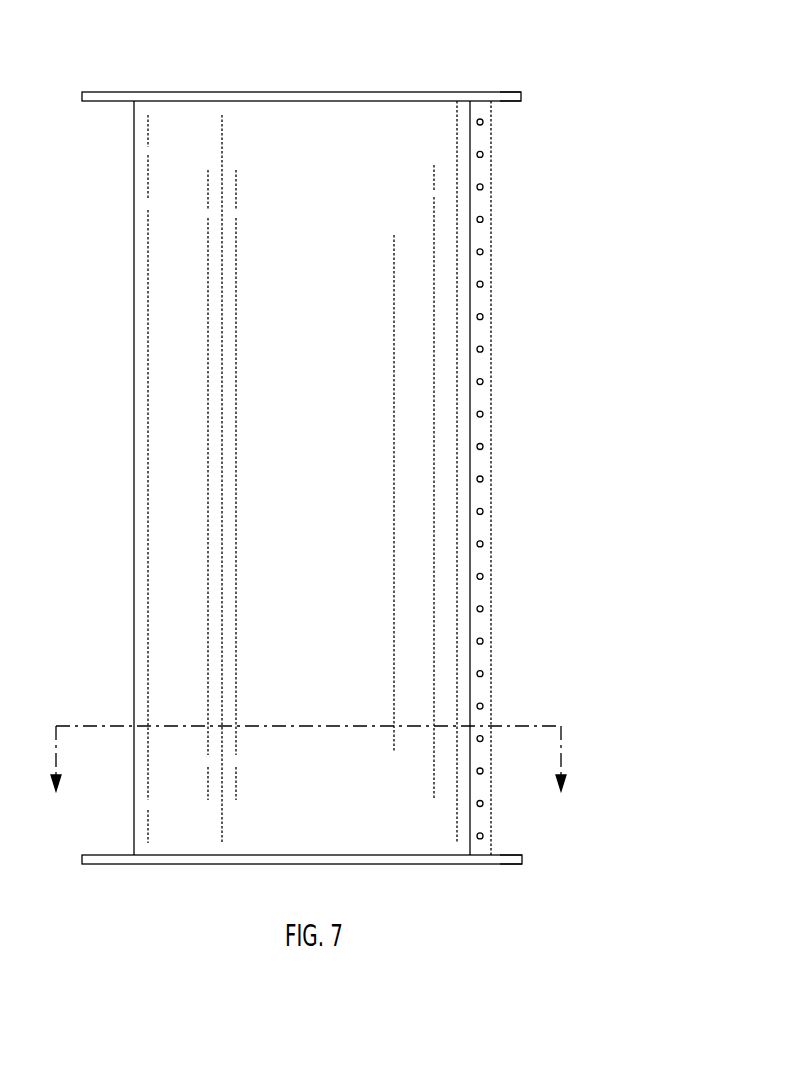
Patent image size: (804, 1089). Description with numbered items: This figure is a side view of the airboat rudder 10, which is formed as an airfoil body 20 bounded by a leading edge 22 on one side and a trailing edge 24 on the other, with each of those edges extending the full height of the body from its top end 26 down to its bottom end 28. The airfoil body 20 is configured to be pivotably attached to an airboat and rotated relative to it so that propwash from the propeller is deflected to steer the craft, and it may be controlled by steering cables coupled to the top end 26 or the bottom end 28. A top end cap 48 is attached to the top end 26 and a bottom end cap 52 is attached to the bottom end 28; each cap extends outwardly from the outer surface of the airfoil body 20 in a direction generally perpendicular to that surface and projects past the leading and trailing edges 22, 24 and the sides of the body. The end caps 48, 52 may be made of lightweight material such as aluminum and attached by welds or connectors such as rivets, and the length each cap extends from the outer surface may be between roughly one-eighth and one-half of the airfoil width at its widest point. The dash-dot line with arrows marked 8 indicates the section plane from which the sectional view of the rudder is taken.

The airboat rudder 10 is at (590, 182).
The airfoil body 20 is at (409, 585).
The leading edge 22 is at (134, 248).
The trailing edge 24 is at (491, 310).
The top end 26 is at (281, 97).
The bottom end 28 is at (218, 855).
The top end cap 48 is at (511, 92).
The bottom end cap 52 is at (513, 864).
The section line 8- 8 is at (308, 779).